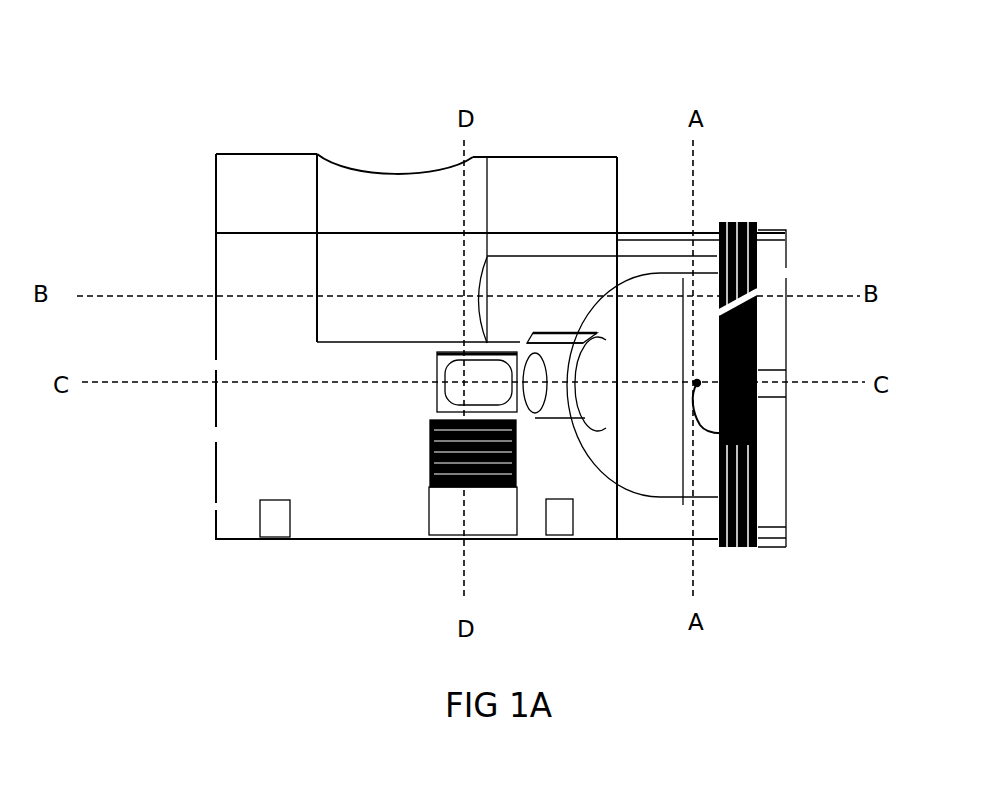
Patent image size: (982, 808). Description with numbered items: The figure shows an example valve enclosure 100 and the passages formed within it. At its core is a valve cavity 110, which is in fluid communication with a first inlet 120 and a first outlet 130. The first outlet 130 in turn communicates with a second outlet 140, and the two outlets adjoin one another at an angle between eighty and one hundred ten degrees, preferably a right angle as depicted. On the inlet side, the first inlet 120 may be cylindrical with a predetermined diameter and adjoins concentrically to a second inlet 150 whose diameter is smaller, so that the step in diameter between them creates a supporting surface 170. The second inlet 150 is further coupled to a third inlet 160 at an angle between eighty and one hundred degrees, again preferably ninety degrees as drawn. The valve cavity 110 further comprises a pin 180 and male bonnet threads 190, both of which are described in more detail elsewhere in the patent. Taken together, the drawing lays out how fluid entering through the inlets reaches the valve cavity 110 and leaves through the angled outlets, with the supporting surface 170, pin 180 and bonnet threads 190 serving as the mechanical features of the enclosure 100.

The valve enclosure 100 is at (323, 78).
The valve cavity 110 is at (676, 431).
The first inlet 120 is at (601, 415).
The first outlet 130 is at (571, 327).
The second outlet 140 is at (413, 287).
The second inlet 150 is at (497, 407).
The third inlet 160 is at (490, 526).
The supporting surface 170 is at (535, 418).
The pin 180 is at (727, 433).
The male bonnet threads 190 is at (738, 222).